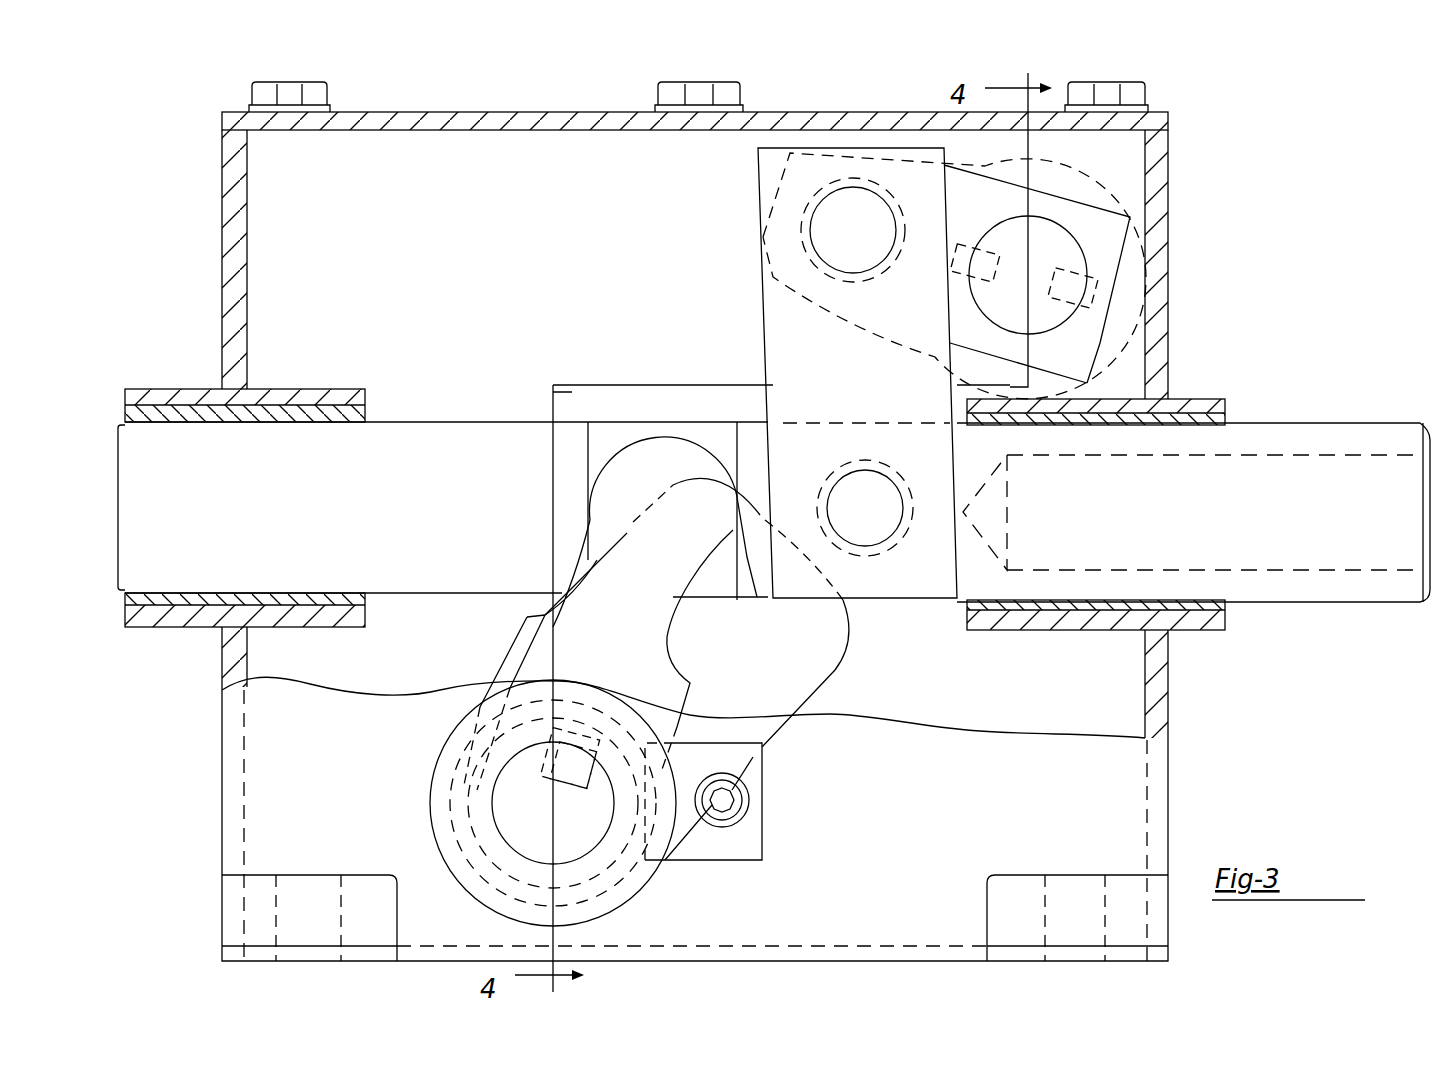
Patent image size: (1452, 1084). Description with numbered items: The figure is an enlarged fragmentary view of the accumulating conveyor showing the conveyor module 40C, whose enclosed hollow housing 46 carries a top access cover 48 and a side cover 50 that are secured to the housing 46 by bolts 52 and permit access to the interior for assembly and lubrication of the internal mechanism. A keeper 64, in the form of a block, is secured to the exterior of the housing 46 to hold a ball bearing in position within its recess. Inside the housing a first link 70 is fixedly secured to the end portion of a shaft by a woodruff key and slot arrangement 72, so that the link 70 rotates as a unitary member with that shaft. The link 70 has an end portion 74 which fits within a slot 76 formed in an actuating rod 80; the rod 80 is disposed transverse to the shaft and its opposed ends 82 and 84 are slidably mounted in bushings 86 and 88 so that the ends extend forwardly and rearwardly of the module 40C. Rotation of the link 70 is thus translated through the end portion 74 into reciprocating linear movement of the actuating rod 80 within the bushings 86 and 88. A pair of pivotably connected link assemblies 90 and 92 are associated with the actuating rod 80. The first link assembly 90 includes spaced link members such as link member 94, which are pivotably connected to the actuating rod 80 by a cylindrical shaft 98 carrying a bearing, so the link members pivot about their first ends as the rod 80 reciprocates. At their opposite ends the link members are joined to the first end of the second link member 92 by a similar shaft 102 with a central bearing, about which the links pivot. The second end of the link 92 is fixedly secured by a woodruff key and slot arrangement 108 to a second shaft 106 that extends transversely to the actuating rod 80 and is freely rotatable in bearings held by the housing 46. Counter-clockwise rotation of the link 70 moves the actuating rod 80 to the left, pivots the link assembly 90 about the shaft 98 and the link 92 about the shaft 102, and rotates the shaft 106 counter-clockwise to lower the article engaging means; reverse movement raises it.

The conveyor module 40C is at (1278, 308).
The housing 46 is at (527, 104).
The top access cover 48 is at (598, 118).
The side cover 50 is at (230, 262).
The bolts 52 is at (262, 96).
The keeper 64 is at (768, 826).
The first link 70 is at (520, 628).
The woodruff key and slot arrangement 72 is at (553, 757).
The end portion 74 is at (600, 445).
The slot 76 is at (745, 600).
The actuating rod 80 is at (378, 420).
The end of actuating rod 82 is at (118, 428).
The end of actuating rod 84 is at (1432, 450).
The bushing 86 is at (265, 402).
The bushing 88 is at (1185, 400).
The first link assembly 90 is at (735, 258).
The second link member 92 is at (960, 170).
The first link member 94 is at (762, 320).
The cylindrical shaft 98 is at (905, 545).
The shaft 102 is at (820, 216).
The second shaft 106 is at (1128, 215).
The woodruff key and slot arrangement 108 is at (962, 246).